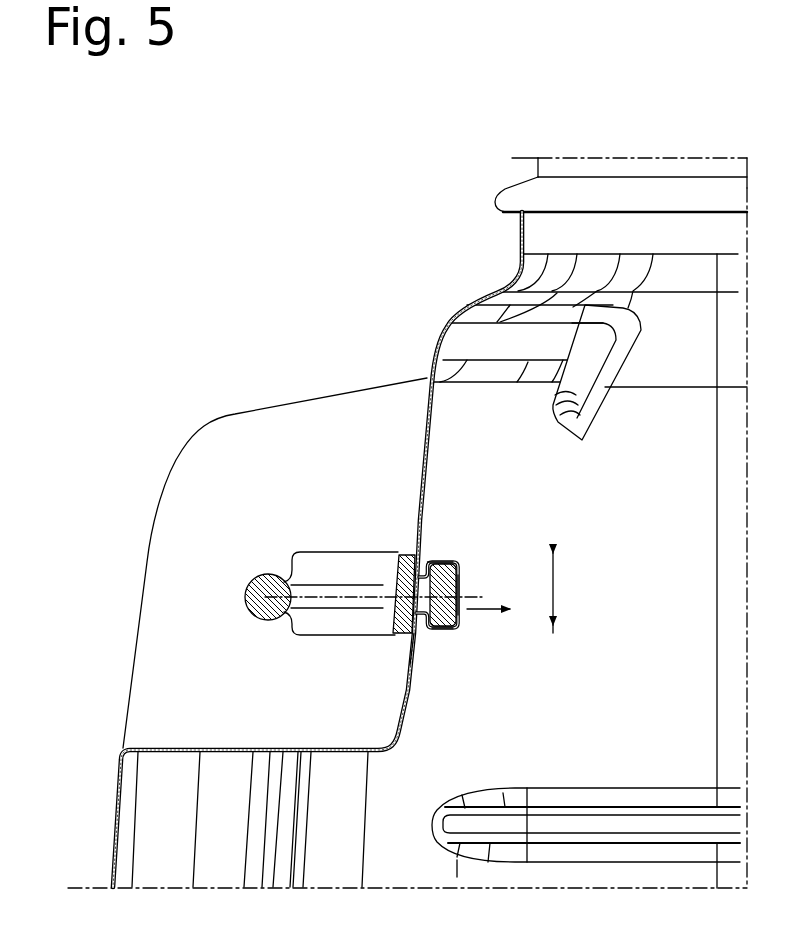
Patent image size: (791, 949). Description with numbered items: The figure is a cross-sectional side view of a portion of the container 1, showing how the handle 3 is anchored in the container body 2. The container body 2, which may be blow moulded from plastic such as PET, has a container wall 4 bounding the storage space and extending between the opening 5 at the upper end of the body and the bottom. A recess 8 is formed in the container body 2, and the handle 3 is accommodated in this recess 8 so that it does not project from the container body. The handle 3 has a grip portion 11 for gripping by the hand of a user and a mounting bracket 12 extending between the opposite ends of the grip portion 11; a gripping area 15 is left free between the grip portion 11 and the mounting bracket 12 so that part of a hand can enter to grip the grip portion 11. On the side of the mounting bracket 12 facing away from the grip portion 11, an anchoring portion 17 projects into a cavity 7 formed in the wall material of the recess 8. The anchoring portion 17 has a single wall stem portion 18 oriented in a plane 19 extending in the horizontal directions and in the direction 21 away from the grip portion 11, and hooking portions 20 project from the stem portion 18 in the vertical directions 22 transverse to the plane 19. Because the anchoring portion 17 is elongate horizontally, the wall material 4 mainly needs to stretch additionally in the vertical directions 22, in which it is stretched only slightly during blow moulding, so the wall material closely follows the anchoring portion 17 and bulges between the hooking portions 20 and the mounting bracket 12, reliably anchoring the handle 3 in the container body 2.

The container 1 is at (426, 549).
The container body 2 is at (380, 372).
The handle 3 is at (357, 580).
The container wall 4 is at (433, 423).
The opening 5 is at (588, 170).
The cavity 7 is at (462, 564).
The recess 8 is at (290, 469).
The grip portion 11 is at (261, 560).
The mounting bracket 12 is at (385, 572).
The gripping area 15 is at (337, 628).
The anchoring portion 17 is at (466, 580).
The stem portion 18 is at (414, 650).
The plane 19 is at (463, 580).
The hooking portions 20 is at (434, 560).
The direction away from the grip portion 21 is at (470, 612).
The vertical directions 22 is at (553, 590).